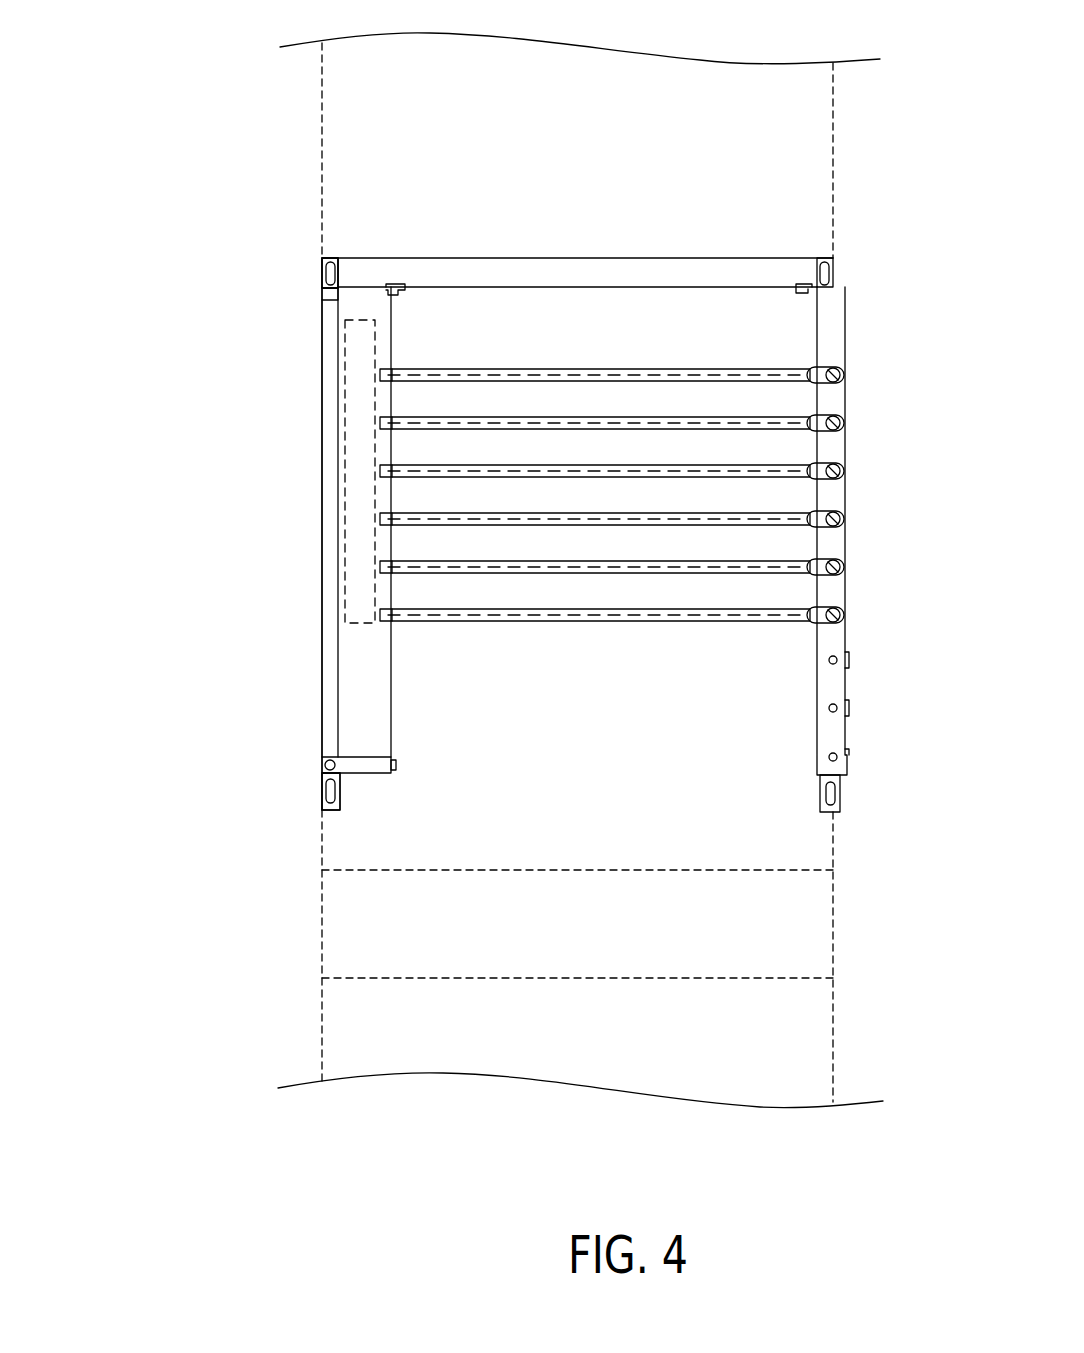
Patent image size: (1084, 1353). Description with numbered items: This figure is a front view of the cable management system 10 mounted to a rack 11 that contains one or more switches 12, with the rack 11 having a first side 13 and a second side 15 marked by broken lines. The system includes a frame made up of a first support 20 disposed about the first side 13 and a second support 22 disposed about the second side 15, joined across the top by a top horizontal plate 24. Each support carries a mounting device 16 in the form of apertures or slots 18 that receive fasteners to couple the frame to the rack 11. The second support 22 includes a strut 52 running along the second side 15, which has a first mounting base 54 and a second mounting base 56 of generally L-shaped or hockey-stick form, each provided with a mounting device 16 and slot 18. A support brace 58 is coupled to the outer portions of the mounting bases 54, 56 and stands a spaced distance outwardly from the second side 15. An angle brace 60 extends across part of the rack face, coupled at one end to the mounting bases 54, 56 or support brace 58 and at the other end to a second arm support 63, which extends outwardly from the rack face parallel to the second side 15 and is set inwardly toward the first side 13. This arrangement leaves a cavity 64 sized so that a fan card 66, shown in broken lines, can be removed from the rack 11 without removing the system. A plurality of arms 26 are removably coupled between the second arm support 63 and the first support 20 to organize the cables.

The cable management system 10 is at (98, 135).
The rack 11 is at (838, 135).
The switch 12 is at (747, 978).
The first side 13 is at (853, 872).
The second side 15 is at (292, 1065).
The mounting device 16 is at (310, 278).
The aperture 18 is at (334, 268).
The first support 20 is at (878, 478).
The second support 22 is at (113, 410).
The top horizontal plate 24 is at (648, 258).
The arm 26 is at (733, 573).
The strut 52 is at (318, 270).
The first mounting base 54 is at (322, 790).
The second mounting base 56 is at (310, 303).
The support brace 58 is at (322, 492).
The angle brace 60 is at (368, 773).
The second arm support 63 is at (392, 663).
The cavity 64 is at (360, 655).
The fan card 66 is at (380, 340).